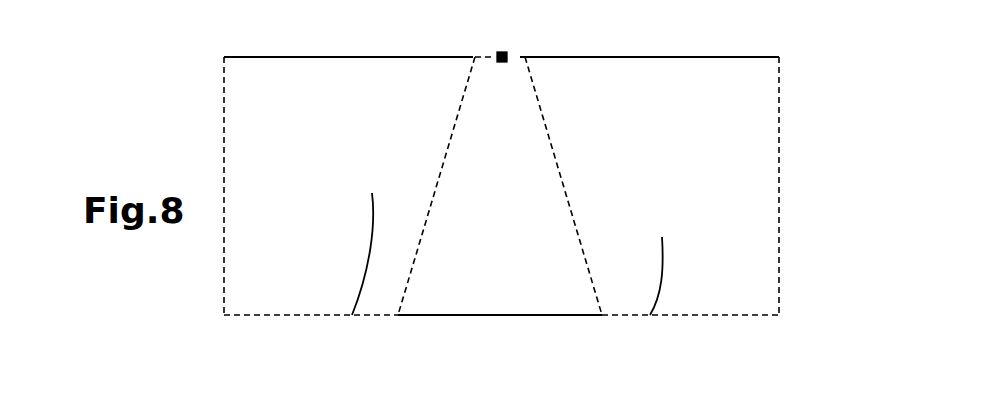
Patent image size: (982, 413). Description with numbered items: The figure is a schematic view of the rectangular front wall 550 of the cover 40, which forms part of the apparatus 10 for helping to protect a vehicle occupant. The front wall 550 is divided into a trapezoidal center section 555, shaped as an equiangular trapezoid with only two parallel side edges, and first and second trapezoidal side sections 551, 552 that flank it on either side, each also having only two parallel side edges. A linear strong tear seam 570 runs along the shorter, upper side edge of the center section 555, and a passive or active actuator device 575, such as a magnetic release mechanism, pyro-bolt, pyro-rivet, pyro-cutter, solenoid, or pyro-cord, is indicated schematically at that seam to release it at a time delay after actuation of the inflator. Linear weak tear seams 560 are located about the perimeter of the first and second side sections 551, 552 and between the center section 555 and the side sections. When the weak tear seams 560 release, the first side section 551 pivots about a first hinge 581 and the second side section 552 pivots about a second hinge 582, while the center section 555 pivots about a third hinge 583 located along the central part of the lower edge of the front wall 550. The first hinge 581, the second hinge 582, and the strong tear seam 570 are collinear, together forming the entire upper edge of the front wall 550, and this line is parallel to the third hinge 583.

The apparatus 10 is at (804, 81).
The cover 40 is at (826, 116).
The front wall 550 is at (203, 63).
The first side section 551 is at (298, 322).
The second side section 552 is at (694, 328).
The center section 555 is at (488, 318).
The weak tear seams 560 is at (222, 193).
The strong tear seam 570 is at (518, 57).
The actuator device 575 is at (502, 62).
The first hinge 581 is at (290, 57).
The second hinge 582 is at (642, 57).
The third hinge 583 is at (430, 316).